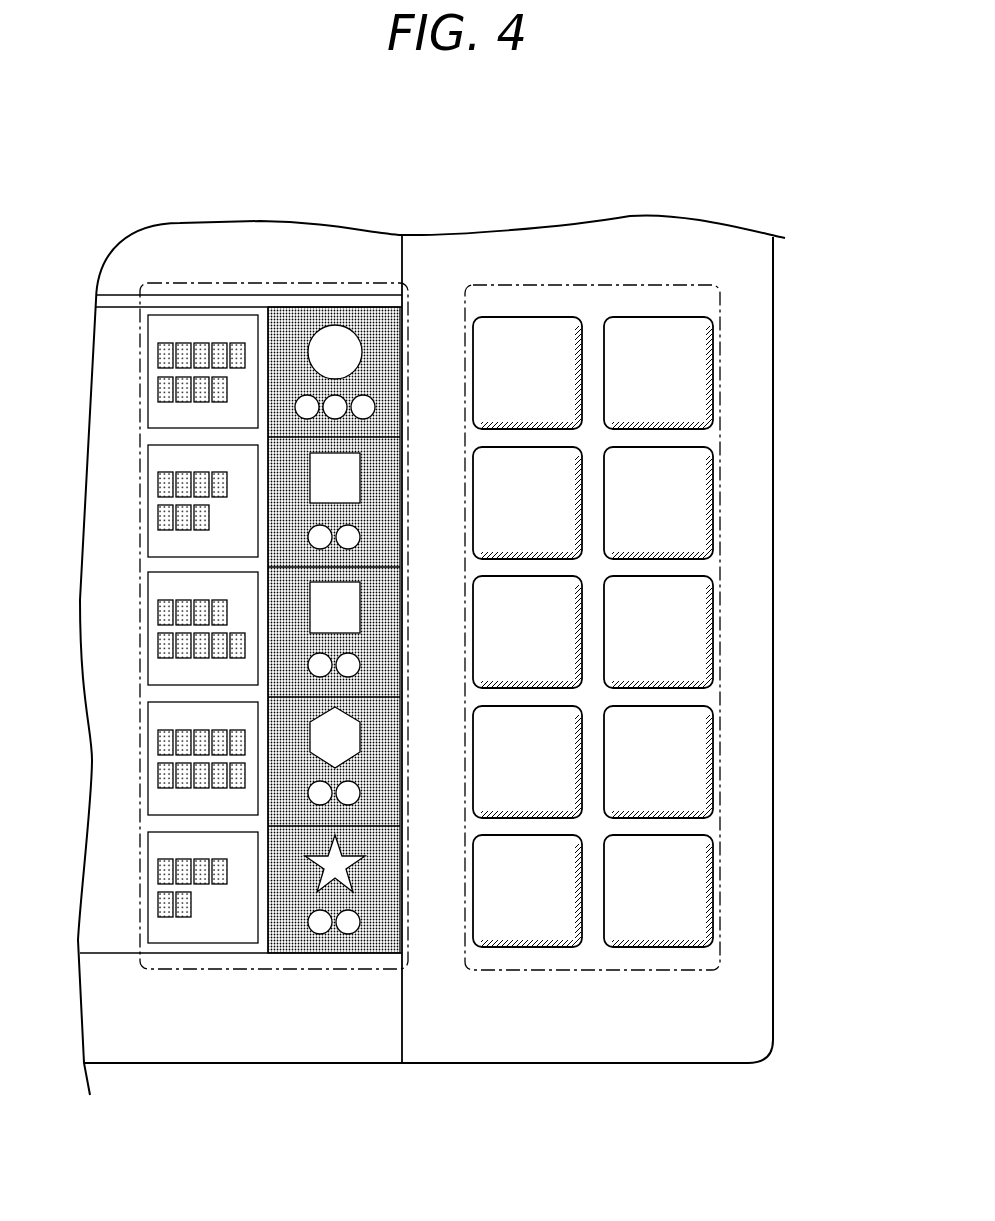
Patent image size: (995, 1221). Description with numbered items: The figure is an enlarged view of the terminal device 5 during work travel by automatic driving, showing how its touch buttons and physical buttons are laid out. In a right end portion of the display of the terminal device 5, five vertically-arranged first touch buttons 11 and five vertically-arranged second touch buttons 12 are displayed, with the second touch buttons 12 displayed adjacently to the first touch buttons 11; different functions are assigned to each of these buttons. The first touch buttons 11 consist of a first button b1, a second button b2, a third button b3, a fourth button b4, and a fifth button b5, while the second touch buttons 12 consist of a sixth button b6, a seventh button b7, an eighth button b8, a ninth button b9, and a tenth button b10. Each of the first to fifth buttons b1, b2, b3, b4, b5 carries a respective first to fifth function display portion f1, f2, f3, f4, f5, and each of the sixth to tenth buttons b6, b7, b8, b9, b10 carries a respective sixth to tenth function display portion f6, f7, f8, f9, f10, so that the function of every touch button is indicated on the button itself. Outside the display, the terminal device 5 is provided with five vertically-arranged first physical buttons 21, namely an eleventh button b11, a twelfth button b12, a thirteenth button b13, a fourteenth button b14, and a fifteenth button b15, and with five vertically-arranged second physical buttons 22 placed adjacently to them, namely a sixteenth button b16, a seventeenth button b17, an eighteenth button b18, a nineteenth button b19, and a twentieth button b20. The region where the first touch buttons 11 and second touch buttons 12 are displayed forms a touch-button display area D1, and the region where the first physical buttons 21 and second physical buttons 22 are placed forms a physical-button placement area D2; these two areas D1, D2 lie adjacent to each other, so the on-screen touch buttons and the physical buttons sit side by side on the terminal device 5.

The terminal device 5 is at (779, 262).
The touch-button display area D1 is at (265, 281).
The physical-button placement area D2 is at (592, 283).
The first touch buttons 11 is at (203, 960).
The second touch buttons 12 is at (341, 960).
The first physical buttons 21 is at (525, 955).
The second physical buttons 22 is at (657, 955).
The first button b1 is at (150, 360).
The second button b2 is at (150, 491).
The third button b3 is at (150, 618).
The fourth button b4 is at (150, 749).
The fifth button b5 is at (150, 878).
The sixth button b6 is at (374, 364).
The seventh button b7 is at (381, 493).
The eighth button b8 is at (381, 620).
The ninth button b9 is at (381, 749).
The tenth button b10 is at (381, 879).
The eleventh button b11 is at (560, 358).
The twelfth button b12 is at (560, 487).
The thirteenth button b13 is at (560, 617).
The fourteenth button b14 is at (560, 748).
The fifteenth button b15 is at (560, 877).
The sixteenth button b16 is at (687, 378).
The seventeenth button b17 is at (687, 508).
The eighteenth button b18 is at (687, 635).
The nineteenth button b19 is at (687, 765).
The twentieth button b20 is at (687, 893).
The first function display portion f1 is at (147, 382).
The second function display portion f2 is at (147, 512).
The third function display portion f3 is at (147, 640).
The fourth function display portion f4 is at (147, 770).
The fifth function display portion f5 is at (147, 900).
The sixth function display portion f6 is at (402, 407).
The seventh function display portion f7 is at (402, 537).
The eighth function display portion f8 is at (402, 647).
The ninth function display portion f9 is at (402, 793).
The tenth function display portion f10 is at (402, 922).